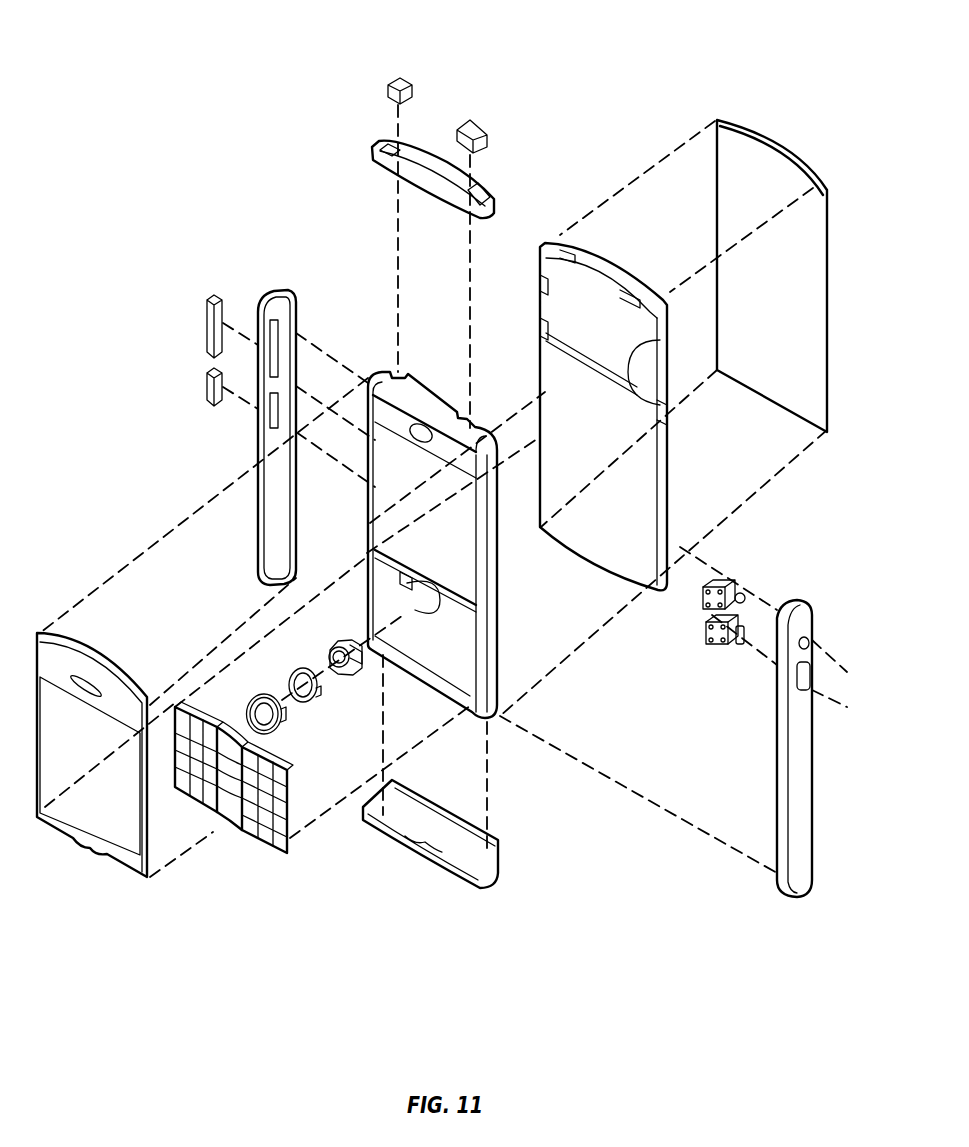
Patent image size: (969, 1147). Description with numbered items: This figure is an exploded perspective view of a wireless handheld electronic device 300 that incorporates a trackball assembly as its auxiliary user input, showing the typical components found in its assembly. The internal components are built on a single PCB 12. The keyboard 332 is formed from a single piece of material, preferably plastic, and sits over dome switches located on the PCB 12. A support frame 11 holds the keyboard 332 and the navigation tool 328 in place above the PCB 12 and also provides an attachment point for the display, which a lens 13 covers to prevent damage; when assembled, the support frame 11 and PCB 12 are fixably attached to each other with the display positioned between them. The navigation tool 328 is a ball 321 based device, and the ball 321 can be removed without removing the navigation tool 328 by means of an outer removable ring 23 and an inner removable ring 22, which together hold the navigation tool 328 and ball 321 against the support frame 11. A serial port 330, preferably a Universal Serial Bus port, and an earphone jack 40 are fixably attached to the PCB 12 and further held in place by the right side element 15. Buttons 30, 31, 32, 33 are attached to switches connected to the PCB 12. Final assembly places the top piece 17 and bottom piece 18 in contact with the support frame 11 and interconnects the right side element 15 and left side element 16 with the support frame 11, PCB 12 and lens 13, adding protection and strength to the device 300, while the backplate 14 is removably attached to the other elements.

The handheld electronic device 300 is at (226, 60).
The support frame 11 is at (440, 390).
The PCB 12 is at (615, 262).
The lens 13 is at (105, 656).
The backplate 14 is at (776, 138).
The right side element 15 is at (775, 740).
The left side element 16 is at (282, 290).
The top piece 17 is at (380, 145).
The bottom piece 18 is at (405, 855).
The inner removable ring 22 is at (320, 703).
The outer removable ring 23 is at (282, 730).
The button 30 is at (388, 78).
The button 31 is at (478, 124).
The button 32 is at (212, 292).
The button 33 is at (212, 366).
The earphone jack 40 is at (700, 593).
The ball 321 is at (338, 674).
The navigation tool 328 is at (368, 665).
The serial port 330 is at (703, 632).
The keyboard 332 is at (245, 842).